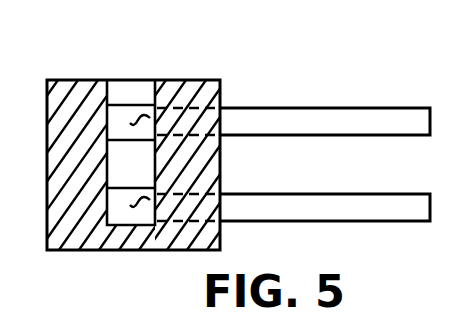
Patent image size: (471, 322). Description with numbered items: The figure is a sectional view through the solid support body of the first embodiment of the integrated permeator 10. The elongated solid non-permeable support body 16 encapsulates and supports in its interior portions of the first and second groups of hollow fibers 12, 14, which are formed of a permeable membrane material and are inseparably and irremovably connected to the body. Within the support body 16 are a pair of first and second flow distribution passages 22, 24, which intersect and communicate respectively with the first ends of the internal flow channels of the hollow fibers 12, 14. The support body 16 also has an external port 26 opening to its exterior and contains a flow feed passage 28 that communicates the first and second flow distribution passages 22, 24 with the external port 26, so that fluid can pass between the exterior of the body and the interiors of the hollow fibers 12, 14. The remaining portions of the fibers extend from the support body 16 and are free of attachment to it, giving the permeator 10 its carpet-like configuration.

The integrated permeator 10 is at (217, 157).
The first group of hollow fibers 12 is at (371, 190).
The second group of hollow fibers 14 is at (372, 105).
The solid non-permeable support body 16 is at (173, 165).
The first flow distribution passage 22 is at (150, 200).
The second flow distribution passage 24 is at (150, 118).
The external port 26 is at (123, 80).
The flow feed passage 28 is at (155, 92).